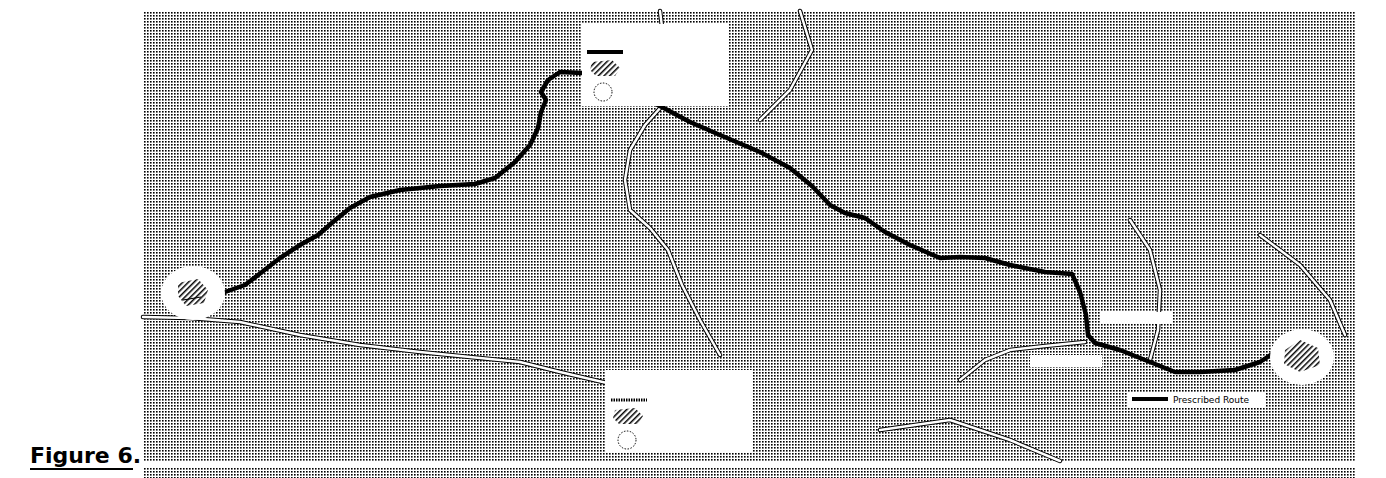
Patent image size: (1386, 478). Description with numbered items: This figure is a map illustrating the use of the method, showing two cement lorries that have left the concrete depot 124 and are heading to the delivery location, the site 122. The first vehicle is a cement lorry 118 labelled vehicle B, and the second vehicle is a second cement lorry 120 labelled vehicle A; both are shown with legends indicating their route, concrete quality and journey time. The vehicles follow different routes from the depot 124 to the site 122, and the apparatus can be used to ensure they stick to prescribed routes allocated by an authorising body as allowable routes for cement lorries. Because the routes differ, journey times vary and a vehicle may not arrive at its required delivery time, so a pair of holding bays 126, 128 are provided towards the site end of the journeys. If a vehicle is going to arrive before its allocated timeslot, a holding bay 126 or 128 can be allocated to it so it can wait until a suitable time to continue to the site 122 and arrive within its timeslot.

The cement lorry 118 is at (616, 382).
The second cement lorry 120 is at (598, 36).
The site 122 is at (1293, 340).
The concrete depot 124 is at (218, 290).
The holding bay 126 is at (1170, 310).
The holding bay 128 is at (1033, 362).